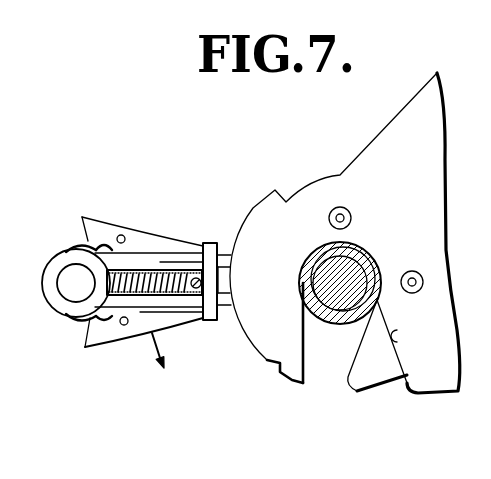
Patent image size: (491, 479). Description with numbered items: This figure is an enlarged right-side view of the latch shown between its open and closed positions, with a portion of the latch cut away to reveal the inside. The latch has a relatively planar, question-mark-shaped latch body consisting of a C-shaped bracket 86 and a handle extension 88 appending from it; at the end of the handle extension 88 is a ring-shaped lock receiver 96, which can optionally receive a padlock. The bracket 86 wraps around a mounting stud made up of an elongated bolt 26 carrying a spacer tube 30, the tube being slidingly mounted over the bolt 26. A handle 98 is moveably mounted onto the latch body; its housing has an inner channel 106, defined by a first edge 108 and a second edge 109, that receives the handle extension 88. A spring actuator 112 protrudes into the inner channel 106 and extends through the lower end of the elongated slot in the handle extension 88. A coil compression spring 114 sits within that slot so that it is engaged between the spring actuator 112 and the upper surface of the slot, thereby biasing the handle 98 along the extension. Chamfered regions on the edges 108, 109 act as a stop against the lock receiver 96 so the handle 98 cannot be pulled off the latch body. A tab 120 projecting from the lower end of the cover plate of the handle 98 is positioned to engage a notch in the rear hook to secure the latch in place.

The elongated bolt 26 is at (323, 258).
The spacer tube 30 is at (353, 245).
The C-shaped bracket 86 is at (360, 384).
The handle extension 88 is at (150, 258).
The ring-shaped lock receiver 96 is at (55, 303).
The handle 98 is at (108, 345).
The inner channel 106 is at (80, 247).
The first edge 108 is at (157, 317).
The second edge 109 is at (177, 248).
The spring actuator 112 is at (199, 270).
The coil compression spring 114 is at (130, 272).
The tab 120 is at (223, 283).